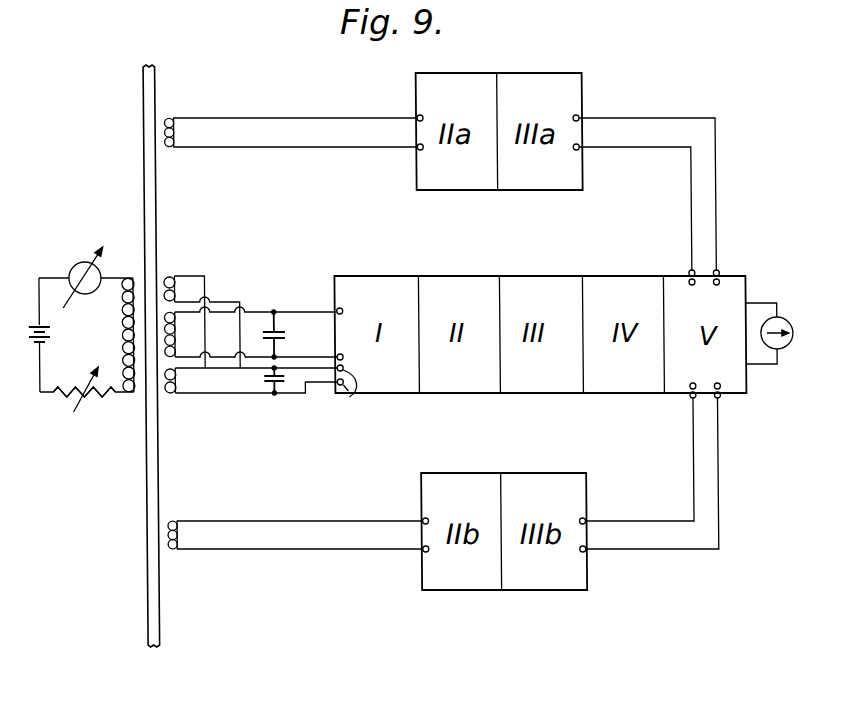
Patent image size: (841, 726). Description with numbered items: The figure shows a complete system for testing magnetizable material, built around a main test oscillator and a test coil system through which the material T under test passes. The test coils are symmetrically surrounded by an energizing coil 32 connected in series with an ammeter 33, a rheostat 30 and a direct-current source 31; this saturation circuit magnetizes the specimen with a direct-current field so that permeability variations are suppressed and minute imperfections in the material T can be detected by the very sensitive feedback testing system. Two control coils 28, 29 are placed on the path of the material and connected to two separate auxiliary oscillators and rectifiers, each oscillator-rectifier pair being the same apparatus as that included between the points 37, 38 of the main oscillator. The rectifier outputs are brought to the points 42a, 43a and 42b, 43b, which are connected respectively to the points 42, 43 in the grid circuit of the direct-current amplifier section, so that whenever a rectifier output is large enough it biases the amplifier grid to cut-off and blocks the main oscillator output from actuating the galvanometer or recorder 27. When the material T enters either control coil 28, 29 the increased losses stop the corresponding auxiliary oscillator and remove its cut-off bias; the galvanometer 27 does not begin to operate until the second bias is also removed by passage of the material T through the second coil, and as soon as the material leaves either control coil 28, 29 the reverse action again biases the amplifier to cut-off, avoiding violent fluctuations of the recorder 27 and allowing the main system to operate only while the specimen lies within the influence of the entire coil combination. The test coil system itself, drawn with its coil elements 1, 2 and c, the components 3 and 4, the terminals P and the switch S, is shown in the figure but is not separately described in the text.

The material T is at (142, 168).
The control coil 28 is at (168, 147).
The control coil 29 is at (168, 549).
The point 37 is at (416, 146).
The point 38 is at (578, 146).
The point 42a is at (688, 271).
The point 43a is at (716, 271).
The point 42b is at (690, 397).
The point 43b is at (716, 397).
The point 42 is at (691, 285).
The point 43 is at (715, 285).
The galvanometer or recorder 27 is at (782, 314).
The ammeter 33 is at (85, 262).
The energizing coil 32 is at (121, 313).
The direct-current source 31 is at (52, 337).
The rheostat 30 is at (84, 399).
The coil 1 is at (174, 333).
The coil 2 is at (176, 290).
The coil c is at (180, 382).
The condenser 3 is at (286, 322).
The condenser 4 is at (263, 378).
The terminals P is at (328, 318).
The switch S is at (343, 394).